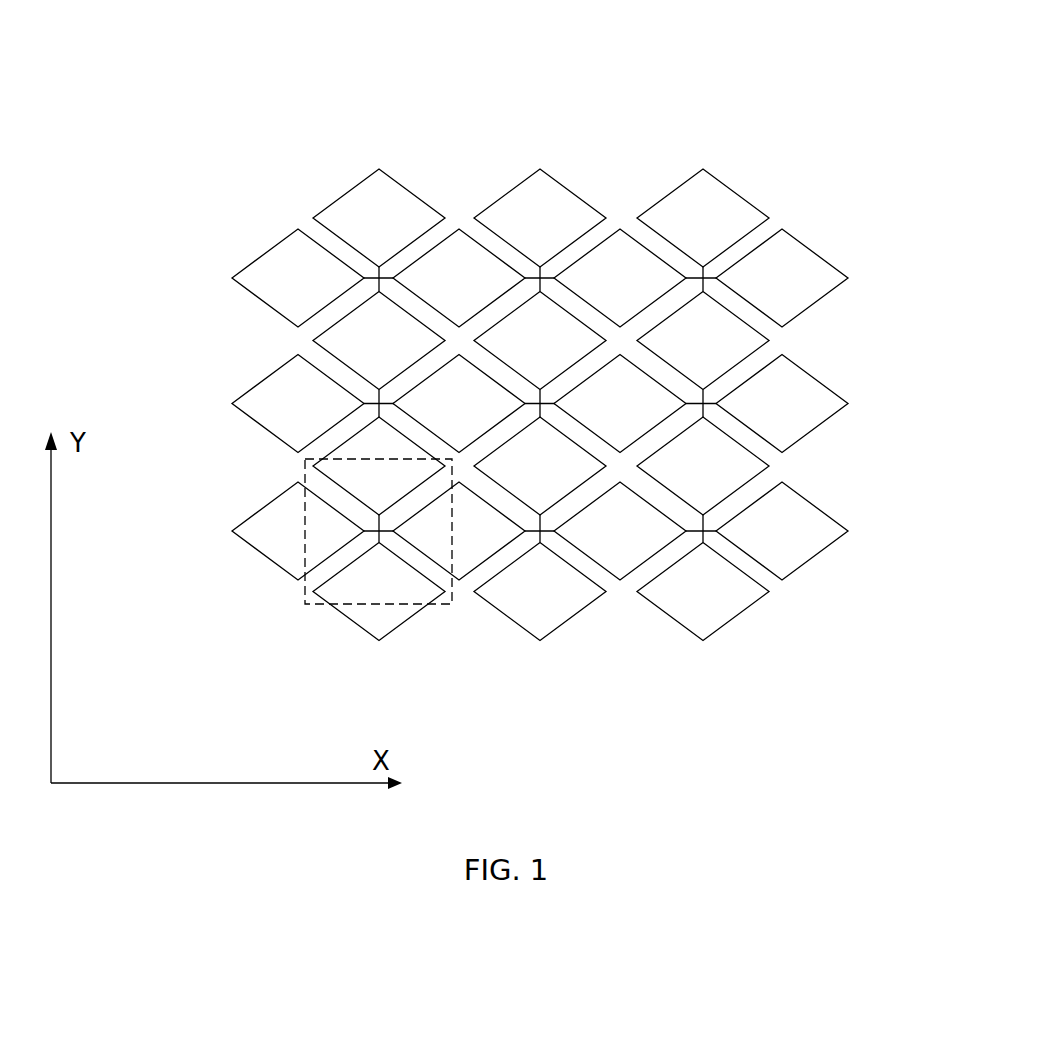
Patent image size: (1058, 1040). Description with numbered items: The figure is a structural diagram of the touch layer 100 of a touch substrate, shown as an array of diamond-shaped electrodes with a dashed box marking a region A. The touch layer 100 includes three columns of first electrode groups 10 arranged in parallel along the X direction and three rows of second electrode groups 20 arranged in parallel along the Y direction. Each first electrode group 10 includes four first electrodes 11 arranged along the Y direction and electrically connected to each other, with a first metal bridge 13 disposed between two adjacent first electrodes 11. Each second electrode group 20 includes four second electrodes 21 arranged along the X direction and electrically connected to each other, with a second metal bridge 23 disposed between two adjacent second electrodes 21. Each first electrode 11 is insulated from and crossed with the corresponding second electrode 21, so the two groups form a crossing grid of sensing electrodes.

The touch layer 100 is at (446, 86).
The first electrode group 10 is at (703, 590).
The first electrode 11 is at (347, 192).
The first metal bridge 13 is at (705, 281).
The second electrode group 20 is at (787, 265).
The second electrode 21 is at (255, 261).
The second metal bridge 23 is at (705, 405).
The region A is at (295, 531).